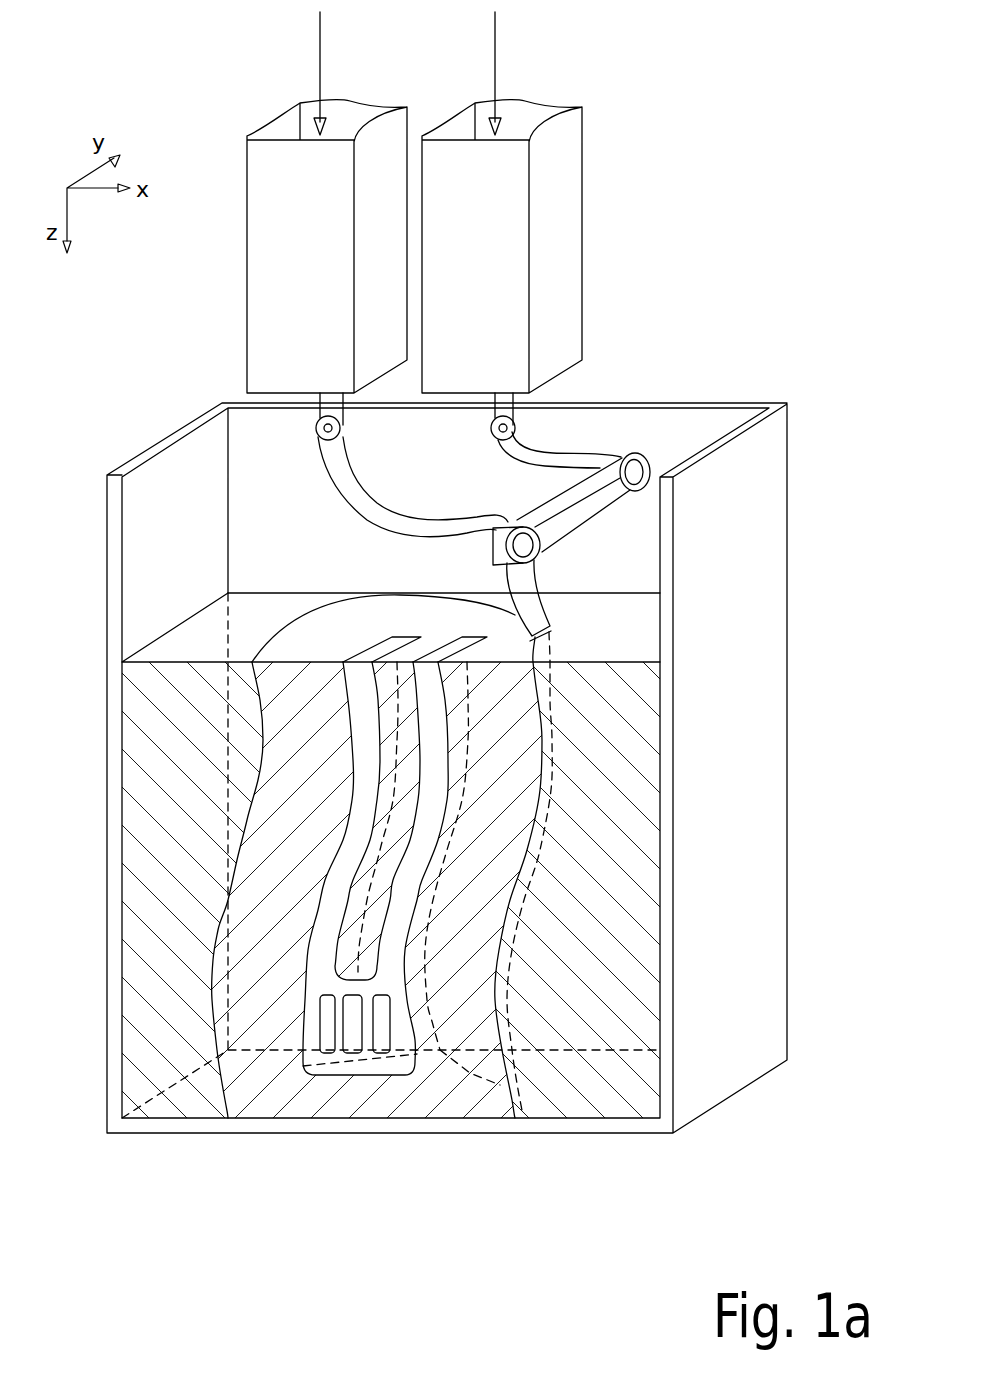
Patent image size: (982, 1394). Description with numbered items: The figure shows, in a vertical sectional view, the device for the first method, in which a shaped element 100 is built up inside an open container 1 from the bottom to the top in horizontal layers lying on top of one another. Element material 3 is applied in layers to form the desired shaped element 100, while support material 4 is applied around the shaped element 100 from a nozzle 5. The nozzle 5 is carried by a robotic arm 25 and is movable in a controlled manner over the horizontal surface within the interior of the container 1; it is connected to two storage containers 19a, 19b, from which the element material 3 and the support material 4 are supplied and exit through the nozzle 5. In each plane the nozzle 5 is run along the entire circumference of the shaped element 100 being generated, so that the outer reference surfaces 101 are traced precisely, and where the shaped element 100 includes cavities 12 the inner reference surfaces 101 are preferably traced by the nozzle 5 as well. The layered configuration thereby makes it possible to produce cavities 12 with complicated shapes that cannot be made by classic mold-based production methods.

The container 1 is at (447, 768).
The element material 3 is at (409, 830).
The support material 4 is at (392, 855).
The nozzle 5 is at (543, 608).
The cavities 12 is at (362, 1013).
The storage container 19a is at (327, 226).
The storage container 19b is at (502, 226).
The robotic arm 25 is at (575, 512).
The shaped element 100 is at (409, 830).
The reference surfaces 101 is at (307, 620).